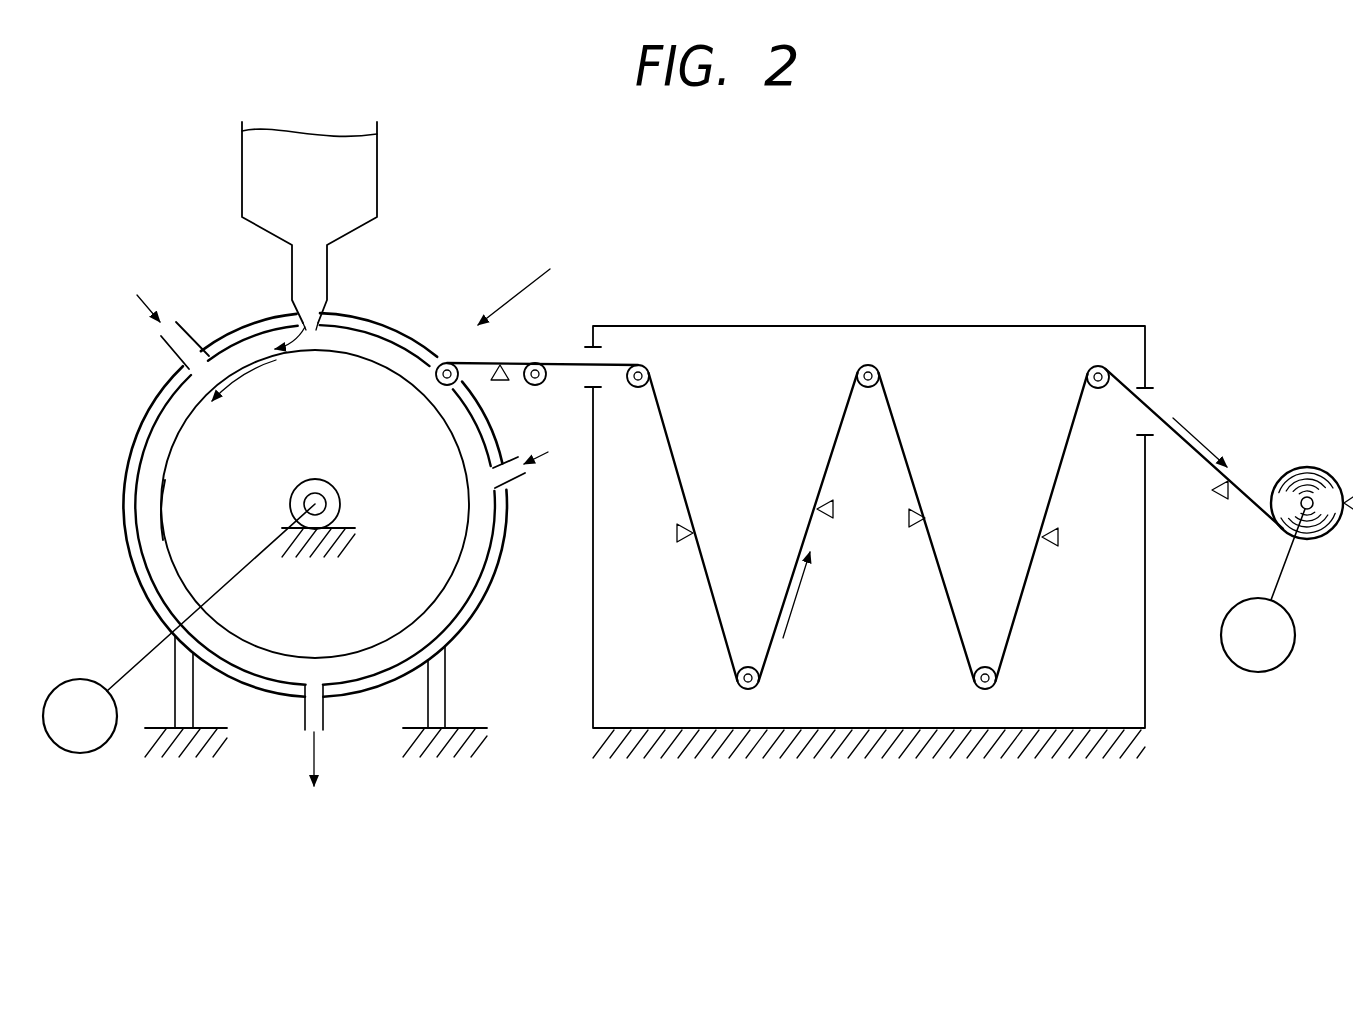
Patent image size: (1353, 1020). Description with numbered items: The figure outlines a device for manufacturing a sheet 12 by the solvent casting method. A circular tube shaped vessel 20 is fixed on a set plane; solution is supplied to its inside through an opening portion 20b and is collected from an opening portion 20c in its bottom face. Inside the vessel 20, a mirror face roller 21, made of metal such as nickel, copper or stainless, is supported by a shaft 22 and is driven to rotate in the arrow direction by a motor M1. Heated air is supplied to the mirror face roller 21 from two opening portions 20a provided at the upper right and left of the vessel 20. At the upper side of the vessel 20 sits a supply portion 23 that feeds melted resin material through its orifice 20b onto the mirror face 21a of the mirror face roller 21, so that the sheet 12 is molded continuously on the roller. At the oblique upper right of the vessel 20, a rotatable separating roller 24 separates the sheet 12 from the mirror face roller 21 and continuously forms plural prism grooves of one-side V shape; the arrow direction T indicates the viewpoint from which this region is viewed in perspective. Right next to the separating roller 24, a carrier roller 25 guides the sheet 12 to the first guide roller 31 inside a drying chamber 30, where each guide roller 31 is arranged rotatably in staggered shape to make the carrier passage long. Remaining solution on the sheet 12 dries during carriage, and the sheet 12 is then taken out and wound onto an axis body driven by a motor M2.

The sheet 12 is at (500, 364).
The vessel 20 is at (148, 403).
The opening portion 20a is at (185, 330).
The opening portion 20b is at (316, 326).
The opening portion 20c is at (316, 714).
The mirror face roller 21 is at (180, 472).
The mirror face 21a is at (167, 537).
The shaft 22 is at (293, 502).
The supply portion 23 is at (252, 173).
The separating roller 24 is at (447, 362).
The carrier roller 25 is at (537, 362).
The drying chamber 30 is at (797, 332).
The guide roller 31 is at (638, 364).
The motor M1 is at (80, 716).
The motor M2 is at (1263, 590).
The arrow direction T is at (513, 292).